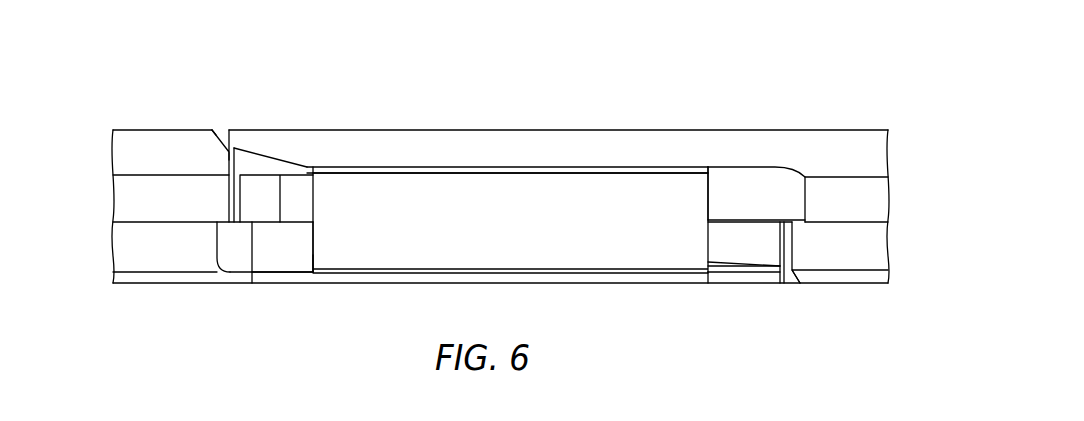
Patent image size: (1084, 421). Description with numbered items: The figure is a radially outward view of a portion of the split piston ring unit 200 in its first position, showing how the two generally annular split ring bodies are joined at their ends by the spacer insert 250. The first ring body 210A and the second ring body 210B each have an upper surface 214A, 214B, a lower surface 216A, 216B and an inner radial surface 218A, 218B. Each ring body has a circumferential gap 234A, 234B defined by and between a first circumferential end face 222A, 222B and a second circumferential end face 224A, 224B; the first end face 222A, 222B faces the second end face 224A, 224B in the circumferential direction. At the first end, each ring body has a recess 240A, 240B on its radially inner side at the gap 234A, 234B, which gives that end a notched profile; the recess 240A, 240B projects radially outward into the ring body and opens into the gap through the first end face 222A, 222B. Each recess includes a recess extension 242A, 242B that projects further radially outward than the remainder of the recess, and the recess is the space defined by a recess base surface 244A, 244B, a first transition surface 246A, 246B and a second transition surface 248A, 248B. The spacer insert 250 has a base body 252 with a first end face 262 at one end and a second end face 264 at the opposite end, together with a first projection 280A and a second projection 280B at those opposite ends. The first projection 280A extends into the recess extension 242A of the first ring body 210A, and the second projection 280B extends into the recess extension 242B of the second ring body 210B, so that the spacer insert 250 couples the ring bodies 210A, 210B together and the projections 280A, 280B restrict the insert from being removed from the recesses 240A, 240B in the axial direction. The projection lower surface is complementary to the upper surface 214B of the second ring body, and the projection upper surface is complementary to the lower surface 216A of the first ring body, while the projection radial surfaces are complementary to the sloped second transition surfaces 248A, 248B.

The split piston ring unit 200 is at (127, 85).
The first ring body 210A is at (108, 189).
The second ring body 210B is at (119, 263).
The upper surface of first ring body 214A is at (865, 142).
The upper surface of second ring body 214B is at (235, 300).
The lower surface of first ring body 216A is at (651, 281).
The lower surface of second ring body 216B is at (848, 276).
The inner radial surface of first ring body 218A is at (872, 187).
The inner radial surface of second ring body 218B is at (872, 247).
The first circumferential end face 222A is at (226, 148).
The first circumferential end face 222B is at (793, 247).
The second circumferential end face 224A is at (281, 158).
The second circumferential end face 224B is at (795, 284).
The circumferential gap 234A is at (215, 122).
The circumferential gap 234B is at (788, 290).
The first recess 240A is at (772, 176).
The second recess 240B is at (278, 264).
The recess extension 242A is at (293, 193).
The recess extension 242B is at (757, 284).
The recess base surface 244A is at (745, 177).
The recess base surface 244B is at (288, 258).
The first transition surface 246A is at (793, 185).
The first transition surface 246B is at (228, 280).
The second transition surface 248A is at (260, 153).
The second transition surface 248B is at (771, 275).
The spacer insert 250 is at (517, 186).
The base body 252 is at (428, 190).
The first end face 262 is at (302, 252).
The second end face 264 is at (710, 187).
The first projection 280A is at (307, 167).
The second projection 280B is at (727, 255).